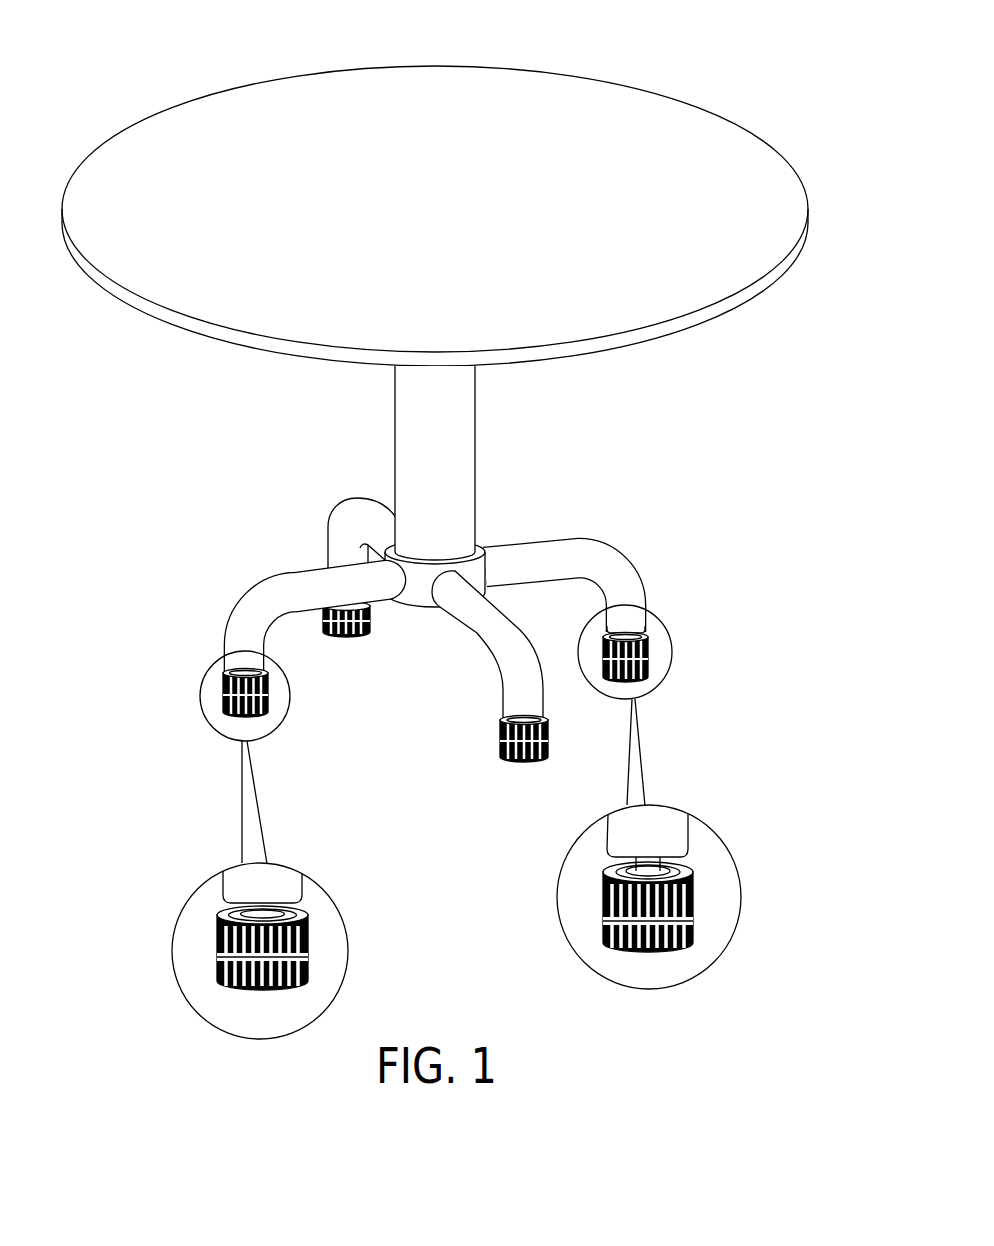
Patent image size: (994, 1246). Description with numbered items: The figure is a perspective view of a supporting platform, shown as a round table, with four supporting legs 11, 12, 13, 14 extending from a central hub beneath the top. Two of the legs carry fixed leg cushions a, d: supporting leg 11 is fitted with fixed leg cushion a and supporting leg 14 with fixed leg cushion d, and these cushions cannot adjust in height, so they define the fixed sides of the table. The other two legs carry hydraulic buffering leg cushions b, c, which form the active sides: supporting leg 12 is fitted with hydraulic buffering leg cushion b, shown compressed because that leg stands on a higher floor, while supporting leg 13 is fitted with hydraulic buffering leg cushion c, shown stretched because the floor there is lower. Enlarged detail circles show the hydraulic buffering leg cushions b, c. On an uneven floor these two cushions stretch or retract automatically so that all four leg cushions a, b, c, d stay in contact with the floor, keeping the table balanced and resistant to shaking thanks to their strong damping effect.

The supporting leg 11 is at (353, 510).
The supporting leg 12 is at (280, 587).
The supporting leg 13 is at (552, 550).
The supporting leg 14 is at (508, 643).
The fixed leg cushion a is at (350, 637).
The hydraulic buffering leg cushion b is at (223, 692).
The hydraulic buffering leg cushion c is at (648, 647).
The fixed leg cushion d is at (500, 730).